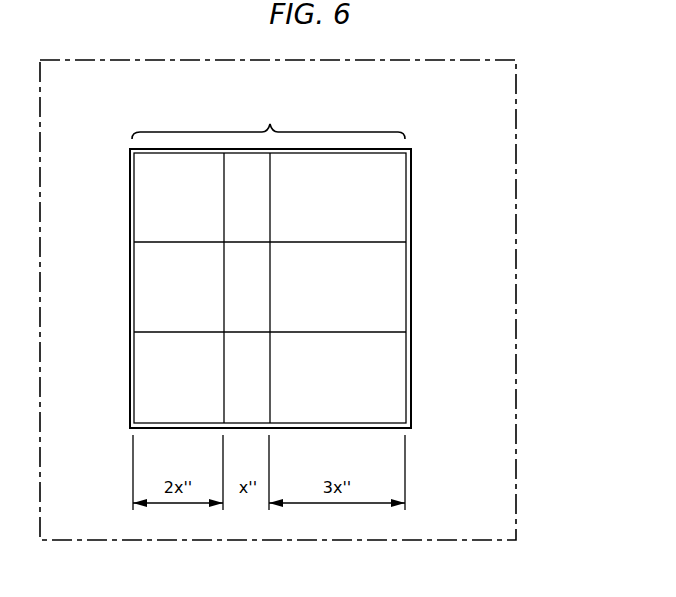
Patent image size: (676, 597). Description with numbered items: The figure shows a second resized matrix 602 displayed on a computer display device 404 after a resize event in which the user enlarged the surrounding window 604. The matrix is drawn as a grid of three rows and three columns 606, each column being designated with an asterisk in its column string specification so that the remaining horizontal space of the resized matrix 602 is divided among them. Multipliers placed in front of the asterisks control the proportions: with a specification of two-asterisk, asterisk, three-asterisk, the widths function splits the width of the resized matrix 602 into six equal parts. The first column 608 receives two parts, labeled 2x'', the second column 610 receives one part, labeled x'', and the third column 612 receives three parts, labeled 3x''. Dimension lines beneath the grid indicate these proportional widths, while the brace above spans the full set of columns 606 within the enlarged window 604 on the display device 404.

The computer display device 404 is at (516, 143).
The second resized matrix 602 is at (411, 193).
The window 604 is at (406, 253).
The columns 606 is at (268, 118).
The first column 608 is at (130, 380).
The second column 610 is at (255, 382).
The third column 612 is at (411, 378).